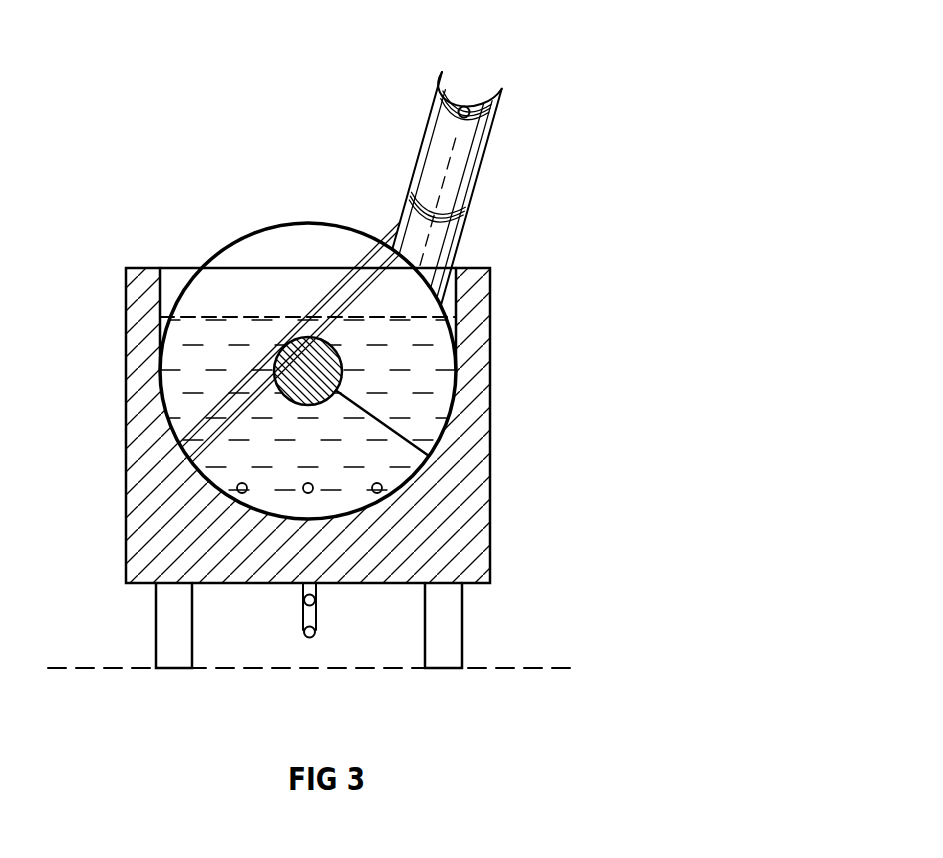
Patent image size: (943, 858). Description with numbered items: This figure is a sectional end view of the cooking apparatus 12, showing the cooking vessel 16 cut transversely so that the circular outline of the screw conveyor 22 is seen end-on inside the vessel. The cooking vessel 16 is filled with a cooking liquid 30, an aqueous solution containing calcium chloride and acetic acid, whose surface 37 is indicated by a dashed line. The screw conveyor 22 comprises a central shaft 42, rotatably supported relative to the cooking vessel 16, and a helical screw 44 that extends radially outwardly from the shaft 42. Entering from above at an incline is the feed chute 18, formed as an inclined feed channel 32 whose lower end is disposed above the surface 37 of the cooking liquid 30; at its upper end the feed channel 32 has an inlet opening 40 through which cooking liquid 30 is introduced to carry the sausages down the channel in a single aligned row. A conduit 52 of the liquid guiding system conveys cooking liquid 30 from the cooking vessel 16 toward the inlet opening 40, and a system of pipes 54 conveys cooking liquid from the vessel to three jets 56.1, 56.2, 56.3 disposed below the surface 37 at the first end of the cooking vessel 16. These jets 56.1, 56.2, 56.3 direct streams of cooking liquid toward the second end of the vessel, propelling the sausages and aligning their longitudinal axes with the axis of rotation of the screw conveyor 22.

The cooking apparatus 12 is at (527, 356).
The cooking vessel 16 is at (473, 438).
The feed chute 18 is at (492, 145).
The screw conveyor 22 is at (255, 226).
The cooking liquid 30 is at (415, 400).
The feed channel 32 is at (466, 190).
The surface 37 is at (275, 306).
The inlet opening 40 is at (470, 102).
The central shaft 42 is at (341, 374).
The helical screw 44 is at (347, 229).
The conduit 52 is at (315, 632).
The system of pipes 54 is at (304, 600).
The jet 56.1 is at (243, 483).
The jet 56.2 is at (309, 483).
The jet 56.3 is at (376, 483).